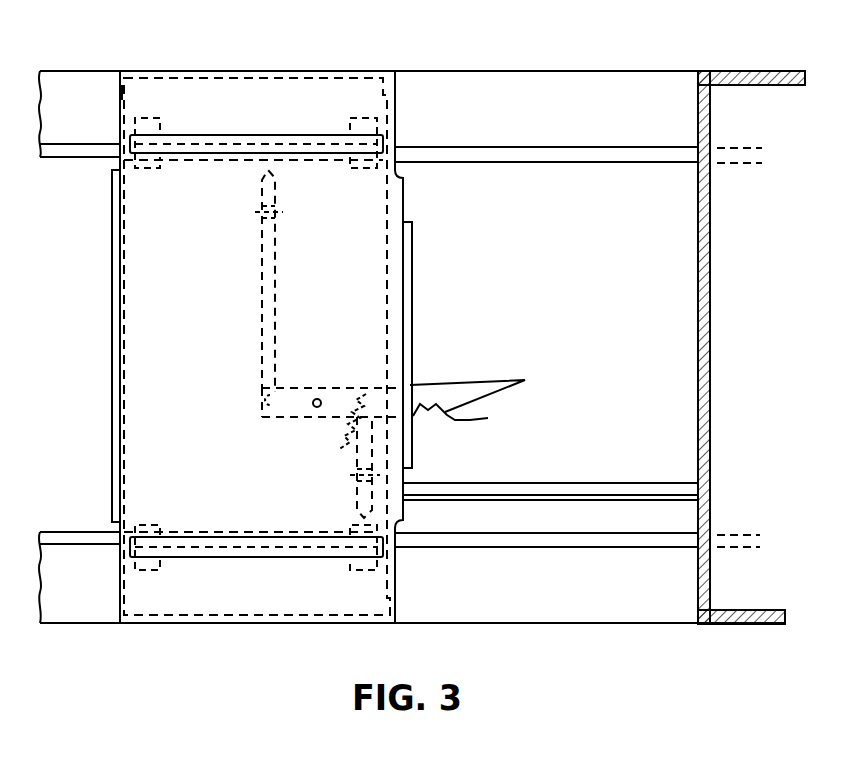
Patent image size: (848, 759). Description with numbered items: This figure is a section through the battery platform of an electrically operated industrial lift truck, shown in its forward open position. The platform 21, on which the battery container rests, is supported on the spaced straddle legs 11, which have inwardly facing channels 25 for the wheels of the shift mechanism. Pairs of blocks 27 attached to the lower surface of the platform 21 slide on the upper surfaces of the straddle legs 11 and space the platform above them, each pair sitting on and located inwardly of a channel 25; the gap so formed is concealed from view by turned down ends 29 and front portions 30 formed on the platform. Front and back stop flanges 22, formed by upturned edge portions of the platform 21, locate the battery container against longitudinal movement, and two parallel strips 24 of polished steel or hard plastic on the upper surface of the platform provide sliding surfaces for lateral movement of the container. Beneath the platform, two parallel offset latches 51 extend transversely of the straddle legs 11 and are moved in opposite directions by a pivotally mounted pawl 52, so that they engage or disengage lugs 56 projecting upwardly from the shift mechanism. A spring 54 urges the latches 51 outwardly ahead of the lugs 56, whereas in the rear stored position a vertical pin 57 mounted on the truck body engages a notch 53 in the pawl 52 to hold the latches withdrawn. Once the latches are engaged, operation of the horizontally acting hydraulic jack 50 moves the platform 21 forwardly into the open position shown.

The straddle legs 11 is at (58, 82).
The platform 21 is at (135, 293).
The stop flanges 22 is at (112, 243).
The strips 24 is at (188, 153).
The channels 25 is at (80, 152).
The blocks 27 is at (152, 108).
The turned down ends 29 is at (290, 78).
The front portions 30 is at (118, 93).
The hydraulic jack 50 is at (590, 483).
The latches 51 is at (280, 298).
The pawl 52 is at (462, 387).
The notch 53 is at (488, 418).
The spring 54 is at (335, 425).
The lugs 56 is at (285, 185).
The vertical pin 57 is at (710, 392).